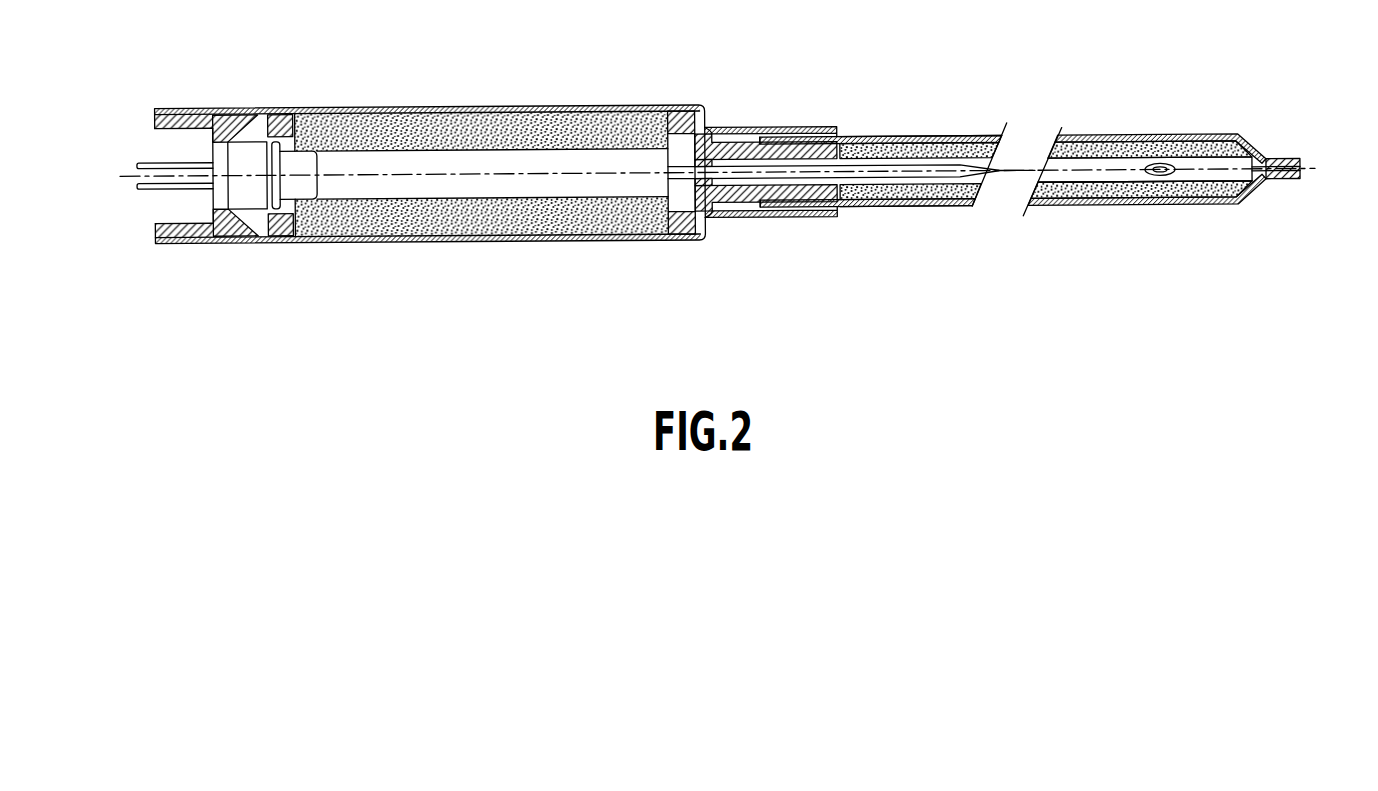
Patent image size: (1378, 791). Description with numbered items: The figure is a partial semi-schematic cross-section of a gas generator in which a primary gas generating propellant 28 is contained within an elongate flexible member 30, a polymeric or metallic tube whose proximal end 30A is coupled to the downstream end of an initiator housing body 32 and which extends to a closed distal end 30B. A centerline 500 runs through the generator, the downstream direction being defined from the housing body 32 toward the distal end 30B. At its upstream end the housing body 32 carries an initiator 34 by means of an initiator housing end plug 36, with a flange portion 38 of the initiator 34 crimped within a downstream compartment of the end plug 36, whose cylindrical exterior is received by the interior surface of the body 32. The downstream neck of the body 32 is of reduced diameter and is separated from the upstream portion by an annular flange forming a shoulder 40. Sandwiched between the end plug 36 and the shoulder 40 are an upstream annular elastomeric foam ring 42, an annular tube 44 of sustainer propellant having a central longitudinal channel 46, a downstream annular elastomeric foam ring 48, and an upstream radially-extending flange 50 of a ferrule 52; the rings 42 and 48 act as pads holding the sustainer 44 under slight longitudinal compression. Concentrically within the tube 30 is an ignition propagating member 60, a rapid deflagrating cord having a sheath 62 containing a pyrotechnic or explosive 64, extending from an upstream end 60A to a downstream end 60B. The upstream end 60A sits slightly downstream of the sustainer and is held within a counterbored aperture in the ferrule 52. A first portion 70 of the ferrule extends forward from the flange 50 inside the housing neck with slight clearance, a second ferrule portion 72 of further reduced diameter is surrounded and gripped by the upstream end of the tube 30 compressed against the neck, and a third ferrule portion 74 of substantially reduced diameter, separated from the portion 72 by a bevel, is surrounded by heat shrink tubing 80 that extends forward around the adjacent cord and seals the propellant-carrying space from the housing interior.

The primary gas generating propellant 28 is at (1104, 185).
The elongate flexible member 30 is at (1103, 133).
The proximal end 30A is at (822, 128).
The distal end 30B is at (1306, 146).
The initiator housing body 32 is at (558, 107).
The initiator 34 is at (296, 196).
The initiator housing end plug 36 is at (197, 233).
The flange portion 38 is at (245, 214).
The shoulder 40 is at (710, 128).
The upstream annular elastomeric foam ring 42 is at (270, 118).
The annular tube of sustainer propellant 44 is at (437, 244).
The central longitudinal channel 46 is at (478, 186).
The downstream annular elastomeric foam ring 48 is at (691, 244).
The upstream radially-extending flange 50 is at (712, 220).
The ferrule 52 is at (812, 122).
The ignition propagating member 60 is at (961, 180).
The upstream end 60A is at (675, 177).
The downstream end 60B is at (1258, 163).
The sheath 62 is at (1065, 170).
The pyrotechnic or explosive 64 is at (1160, 180).
The first portion 70 is at (727, 129).
The second ferrule portion 72 is at (848, 208).
The third ferrule portion 74 is at (883, 137).
The heat shrink tubing 80 is at (943, 145).
The centerline 500 is at (135, 178).